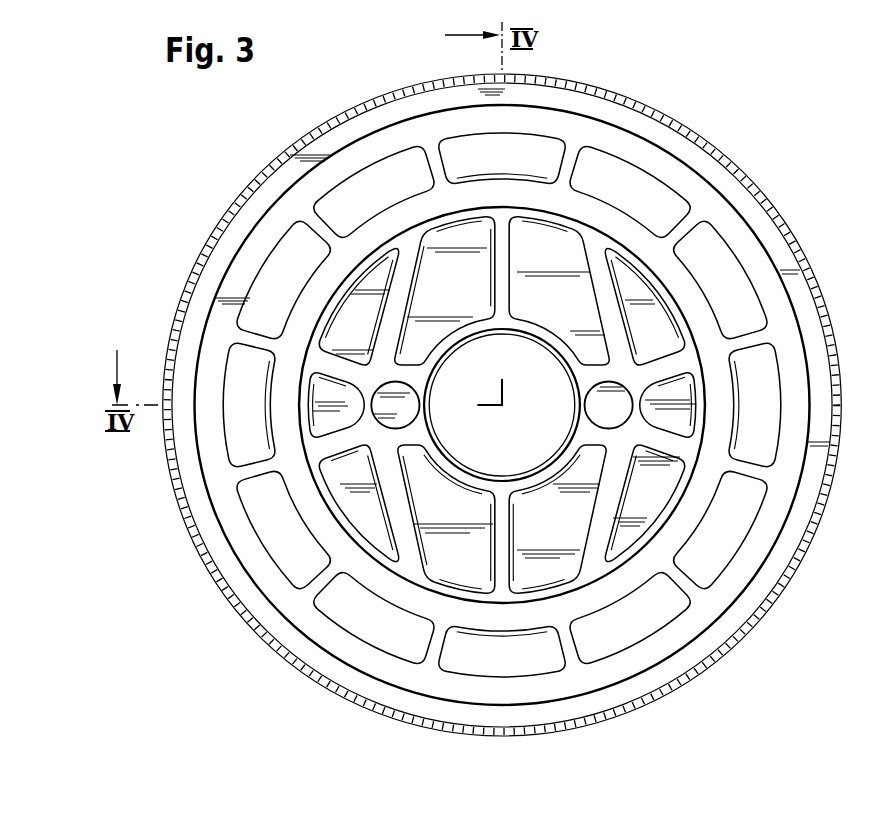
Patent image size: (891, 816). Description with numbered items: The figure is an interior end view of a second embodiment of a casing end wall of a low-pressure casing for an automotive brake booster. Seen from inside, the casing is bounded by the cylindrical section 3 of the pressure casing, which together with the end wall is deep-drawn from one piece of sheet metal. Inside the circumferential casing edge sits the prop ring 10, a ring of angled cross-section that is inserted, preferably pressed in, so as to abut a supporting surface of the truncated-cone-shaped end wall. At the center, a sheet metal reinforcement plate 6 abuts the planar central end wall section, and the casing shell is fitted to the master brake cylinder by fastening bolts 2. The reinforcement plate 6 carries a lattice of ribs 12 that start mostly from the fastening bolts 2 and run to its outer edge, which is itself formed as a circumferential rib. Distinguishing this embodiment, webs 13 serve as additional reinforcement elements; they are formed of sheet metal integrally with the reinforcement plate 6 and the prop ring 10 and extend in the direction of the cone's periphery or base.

The fastening bolt 2 is at (620, 408).
The cylindrical section 3 is at (707, 136).
The reinforcement plate 6 is at (406, 244).
The prop ring 10 is at (556, 97).
The ribs 12 is at (661, 371).
The webs 13 is at (568, 164).